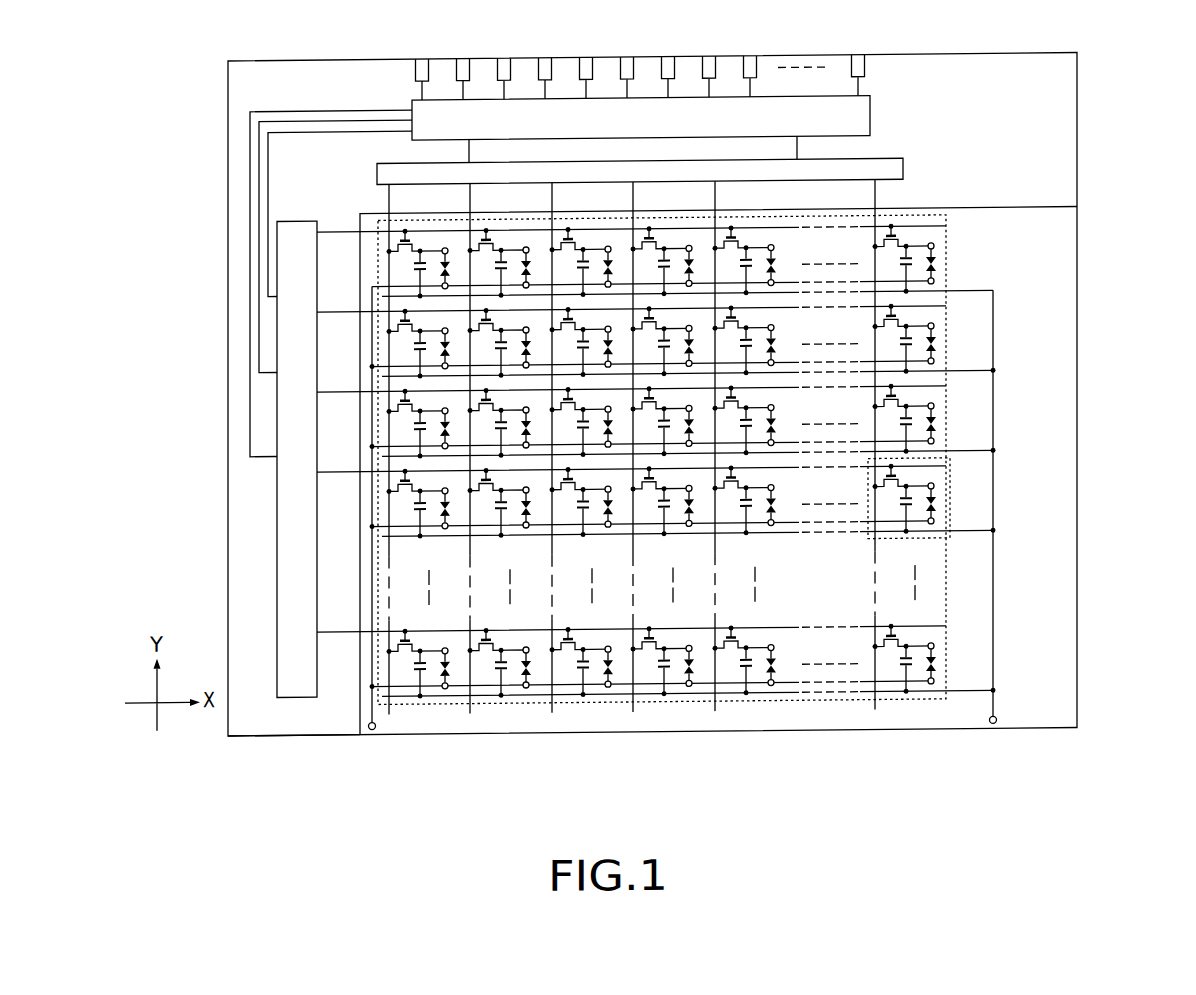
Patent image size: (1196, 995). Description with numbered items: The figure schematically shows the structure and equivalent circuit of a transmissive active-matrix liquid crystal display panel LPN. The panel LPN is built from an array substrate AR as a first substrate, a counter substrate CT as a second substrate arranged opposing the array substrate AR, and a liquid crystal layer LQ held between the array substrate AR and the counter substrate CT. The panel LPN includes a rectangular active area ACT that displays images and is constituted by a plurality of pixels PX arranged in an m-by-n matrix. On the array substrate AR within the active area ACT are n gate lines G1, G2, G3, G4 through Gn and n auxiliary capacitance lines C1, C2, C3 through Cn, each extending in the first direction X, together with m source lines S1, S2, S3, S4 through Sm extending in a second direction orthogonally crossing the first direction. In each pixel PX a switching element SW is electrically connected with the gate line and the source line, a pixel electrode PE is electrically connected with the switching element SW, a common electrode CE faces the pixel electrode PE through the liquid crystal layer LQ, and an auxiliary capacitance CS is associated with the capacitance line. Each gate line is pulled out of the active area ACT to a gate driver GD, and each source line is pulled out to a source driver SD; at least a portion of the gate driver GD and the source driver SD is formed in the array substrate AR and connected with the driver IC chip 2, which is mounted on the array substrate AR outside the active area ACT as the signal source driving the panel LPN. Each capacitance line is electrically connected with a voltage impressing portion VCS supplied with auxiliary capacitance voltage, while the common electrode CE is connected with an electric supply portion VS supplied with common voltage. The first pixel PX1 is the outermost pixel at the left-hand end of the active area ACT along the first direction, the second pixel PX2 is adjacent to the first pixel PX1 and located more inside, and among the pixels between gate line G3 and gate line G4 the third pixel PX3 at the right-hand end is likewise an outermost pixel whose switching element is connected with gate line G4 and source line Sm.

The driver IC chip 2 is at (866, 102).
The liquid crystal display panel LPN is at (1100, 88).
The source driver SD is at (905, 172).
The counter substrate CT is at (1047, 215).
The active area ACT is at (946, 330).
The gate driver GD is at (277, 569).
The array substrate AR is at (292, 727).
The gate line G1 is at (338, 231).
The gate line G2 is at (338, 311).
The gate line G3 is at (338, 391).
The gate line G4 is at (338, 471).
The gate line Gn is at (340, 631).
The source line S1 is at (392, 201).
The source line S2 is at (473, 202).
The source line S3 is at (555, 203).
The source line S4 is at (636, 203).
The source line Sm is at (878, 204).
The auxiliary capacitance line C1 is at (969, 297).
The auxiliary capacitance line C2 is at (969, 377).
The auxiliary capacitance line C3 is at (969, 457).
The auxiliary capacitance line Cn is at (969, 697).
The electric supply portion VS is at (375, 730).
The voltage impressing portion VCS is at (996, 725).
The pixel PX is at (923, 503).
The first pixel PX1 is at (459, 436).
The second pixel PX2 is at (541, 436).
The third pixel PX3 is at (950, 402).
The switching element SW is at (876, 489).
The auxiliary capacitance CS is at (888, 516).
The pixel electrode PE is at (934, 491).
The liquid crystal layer LQ is at (937, 507).
The common electrode CE is at (935, 526).